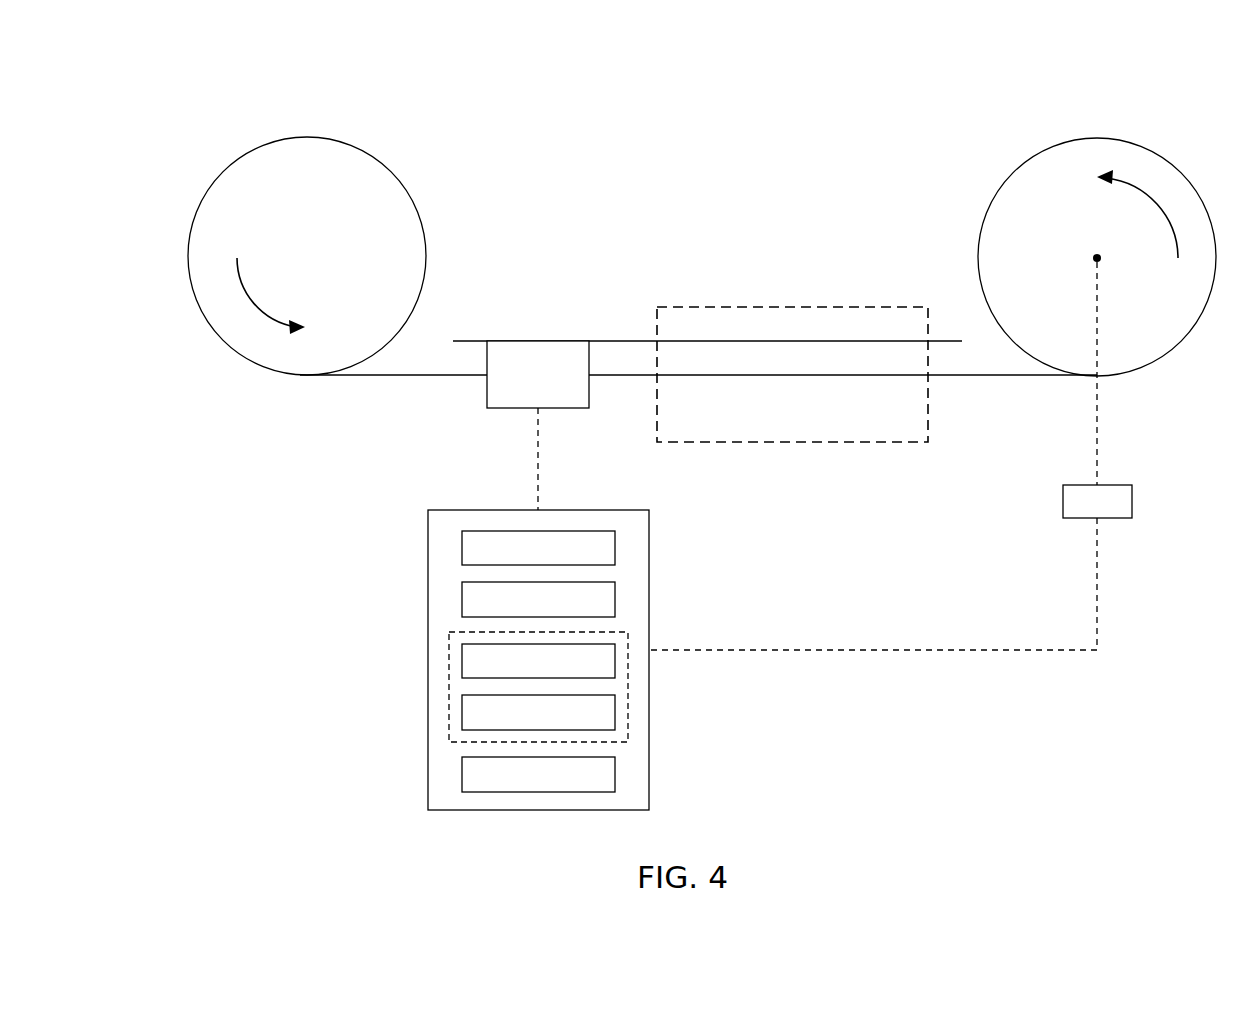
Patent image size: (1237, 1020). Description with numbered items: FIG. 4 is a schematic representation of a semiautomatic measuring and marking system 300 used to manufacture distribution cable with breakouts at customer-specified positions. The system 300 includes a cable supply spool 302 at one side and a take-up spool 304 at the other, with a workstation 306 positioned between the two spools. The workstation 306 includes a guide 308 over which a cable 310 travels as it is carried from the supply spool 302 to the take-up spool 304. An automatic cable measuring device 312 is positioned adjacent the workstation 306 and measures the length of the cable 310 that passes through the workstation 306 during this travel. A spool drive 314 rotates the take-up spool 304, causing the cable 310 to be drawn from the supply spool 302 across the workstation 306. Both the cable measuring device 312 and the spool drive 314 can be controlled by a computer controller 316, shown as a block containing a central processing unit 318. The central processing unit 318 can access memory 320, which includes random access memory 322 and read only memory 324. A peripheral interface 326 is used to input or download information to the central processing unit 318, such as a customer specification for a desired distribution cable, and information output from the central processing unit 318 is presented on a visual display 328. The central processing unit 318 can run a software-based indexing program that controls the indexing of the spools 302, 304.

The semiautomatic measuring and marking system 300 is at (211, 125).
The cable supply spool 302 is at (395, 175).
The take-up spool 304 is at (1010, 178).
The workstation 306 is at (800, 305).
The guide 308 is at (631, 340).
The cable 310 is at (393, 377).
The automatic cable measuring device 312 is at (485, 397).
The spool drive 314 is at (1132, 505).
The computer controller 316 is at (662, 745).
The central processing unit 318 is at (462, 765).
The memory 320 is at (640, 675).
The random access memory 322 is at (462, 705).
The read only memory 324 is at (462, 654).
The peripheral interface 326 is at (462, 596).
The visual display 328 is at (462, 544).